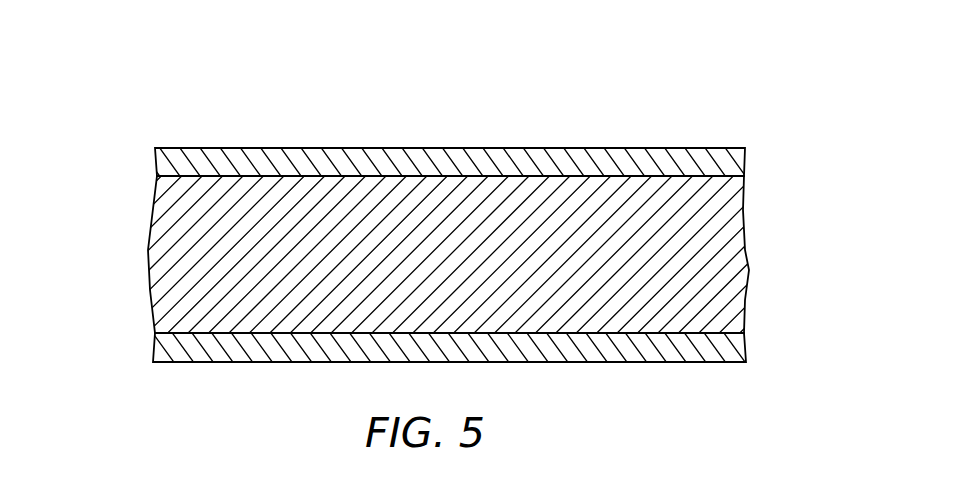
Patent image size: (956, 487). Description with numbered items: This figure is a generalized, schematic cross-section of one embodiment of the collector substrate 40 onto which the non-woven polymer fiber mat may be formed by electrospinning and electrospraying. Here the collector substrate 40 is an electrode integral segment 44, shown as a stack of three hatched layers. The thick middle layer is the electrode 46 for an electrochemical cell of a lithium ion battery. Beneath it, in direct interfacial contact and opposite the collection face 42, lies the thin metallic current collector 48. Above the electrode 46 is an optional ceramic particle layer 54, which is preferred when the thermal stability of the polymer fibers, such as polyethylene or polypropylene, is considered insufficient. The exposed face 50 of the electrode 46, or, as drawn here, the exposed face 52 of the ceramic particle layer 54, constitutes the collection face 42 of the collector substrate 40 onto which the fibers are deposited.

The collector substrate 40 is at (448, 223).
The collection face 42 is at (453, 113).
The electrode integral segment 44 is at (448, 254).
The electrode 46 is at (730, 247).
The metallic current collector 48 is at (175, 348).
The exposed face of the electrode 50 is at (240, 175).
The exposed face of the ceramic particle layer 52 is at (348, 147).
The ceramic particle layer 54 is at (483, 160).